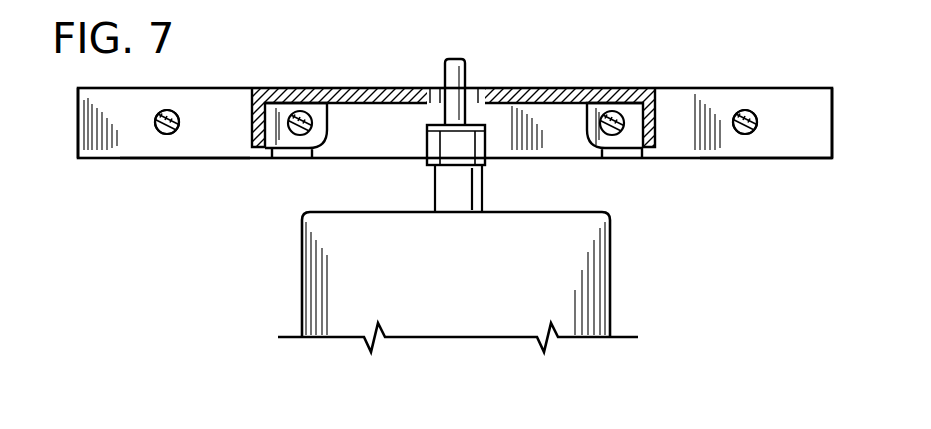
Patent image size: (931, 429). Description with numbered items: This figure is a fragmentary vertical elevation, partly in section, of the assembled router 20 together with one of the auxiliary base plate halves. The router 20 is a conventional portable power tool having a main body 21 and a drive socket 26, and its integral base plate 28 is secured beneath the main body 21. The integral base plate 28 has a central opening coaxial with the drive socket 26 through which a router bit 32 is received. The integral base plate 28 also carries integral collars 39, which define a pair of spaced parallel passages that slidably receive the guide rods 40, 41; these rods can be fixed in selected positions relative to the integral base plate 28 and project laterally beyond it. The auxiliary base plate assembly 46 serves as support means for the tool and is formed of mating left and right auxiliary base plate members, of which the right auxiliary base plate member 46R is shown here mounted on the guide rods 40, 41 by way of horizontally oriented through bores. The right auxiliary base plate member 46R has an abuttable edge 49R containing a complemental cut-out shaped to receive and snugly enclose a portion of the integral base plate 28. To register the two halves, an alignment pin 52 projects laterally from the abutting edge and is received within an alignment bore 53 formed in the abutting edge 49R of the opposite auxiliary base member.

The router 20 is at (624, 252).
The main body 21 is at (432, 279).
The drive socket 26 is at (452, 150).
The integral base plate 28 is at (592, 88).
The router bit 32 is at (468, 85).
The collars 39 is at (318, 152).
The guide rod 40 is at (626, 137).
The guide rod 41 is at (302, 110).
The auxiliary base plate assembly 46 is at (772, 75).
The right auxiliary base plate member 46R is at (78, 147).
The abuttable edge 49R is at (222, 143).
The alignment pin 52 is at (171, 114).
The alignment bore 53 is at (167, 134).